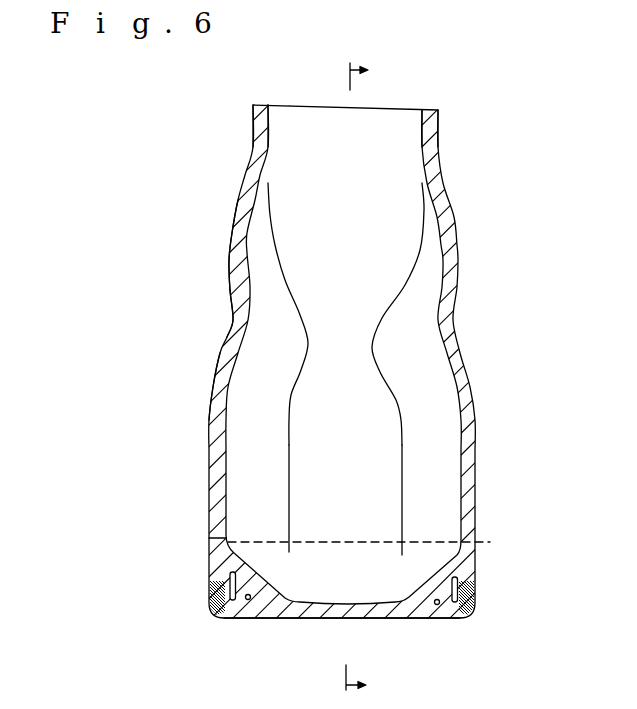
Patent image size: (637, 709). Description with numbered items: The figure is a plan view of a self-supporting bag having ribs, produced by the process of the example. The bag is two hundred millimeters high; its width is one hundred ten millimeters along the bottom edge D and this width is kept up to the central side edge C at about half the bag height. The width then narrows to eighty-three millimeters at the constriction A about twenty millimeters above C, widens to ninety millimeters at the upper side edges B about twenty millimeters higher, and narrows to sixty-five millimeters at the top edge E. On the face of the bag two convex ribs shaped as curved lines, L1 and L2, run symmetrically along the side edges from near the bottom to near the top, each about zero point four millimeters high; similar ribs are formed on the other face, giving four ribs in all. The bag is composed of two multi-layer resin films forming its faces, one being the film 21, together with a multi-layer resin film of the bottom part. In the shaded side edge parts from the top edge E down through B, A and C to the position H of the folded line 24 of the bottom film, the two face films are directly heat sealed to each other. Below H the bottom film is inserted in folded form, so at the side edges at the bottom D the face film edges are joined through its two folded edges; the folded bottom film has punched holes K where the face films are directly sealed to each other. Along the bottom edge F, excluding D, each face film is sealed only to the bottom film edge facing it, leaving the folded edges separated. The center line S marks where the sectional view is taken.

The top edge E is at (257, 117).
The upper side edges B is at (238, 246).
The constriction A is at (247, 318).
The central side edge C is at (222, 379).
The multi-layer resin film forming one face of the bag 21 is at (417, 288).
The convex rib L1 is at (289, 457).
The convex rib L2 is at (403, 430).
The folded line of the multi-layer resin film of the bottom part 24 is at (371, 540).
The position of the folded line of the bottom part film H is at (206, 538).
The bottom edge side edges D is at (212, 566).
The punched holes K is at (212, 604).
The bottom edge F is at (362, 612).
The center line S is at (367, 379).